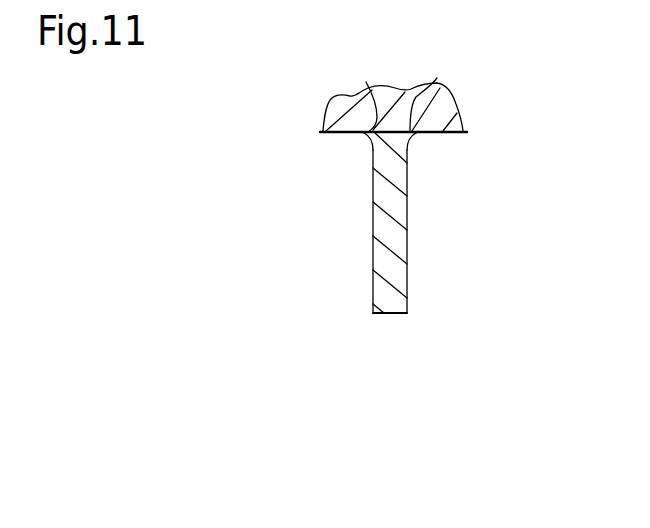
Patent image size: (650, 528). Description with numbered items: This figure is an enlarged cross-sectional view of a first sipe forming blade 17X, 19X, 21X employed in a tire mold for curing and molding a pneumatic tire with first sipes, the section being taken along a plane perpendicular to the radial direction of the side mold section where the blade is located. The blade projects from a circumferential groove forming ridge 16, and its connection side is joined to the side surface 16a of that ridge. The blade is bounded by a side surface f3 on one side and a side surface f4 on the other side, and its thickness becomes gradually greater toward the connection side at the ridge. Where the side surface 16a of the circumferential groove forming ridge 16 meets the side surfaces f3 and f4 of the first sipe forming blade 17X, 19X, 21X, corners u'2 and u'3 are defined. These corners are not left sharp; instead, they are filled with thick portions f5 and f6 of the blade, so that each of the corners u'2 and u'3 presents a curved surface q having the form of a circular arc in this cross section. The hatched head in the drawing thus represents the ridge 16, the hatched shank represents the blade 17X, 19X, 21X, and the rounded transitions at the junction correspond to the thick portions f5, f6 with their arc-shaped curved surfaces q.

The circumferential groove forming ridge 16 is at (432, 130).
The side surface of the circumferential groove forming ridge 16a is at (452, 133).
The corner u'3 is at (367, 80).
The corner u'2 is at (436, 80).
The first sipe forming blade 17X is at (361, 242).
The first sipe forming blade 19X is at (361, 222).
The first sipe forming blade 21X is at (361, 222).
The thick portion f6 is at (373, 135).
The thick portion f5 is at (427, 168).
The curved surface q is at (373, 149).
The side surface on the other side of the first sipe forming blade f4 is at (373, 232).
The side surface on one side of the first sipe forming blade f3 is at (407, 250).